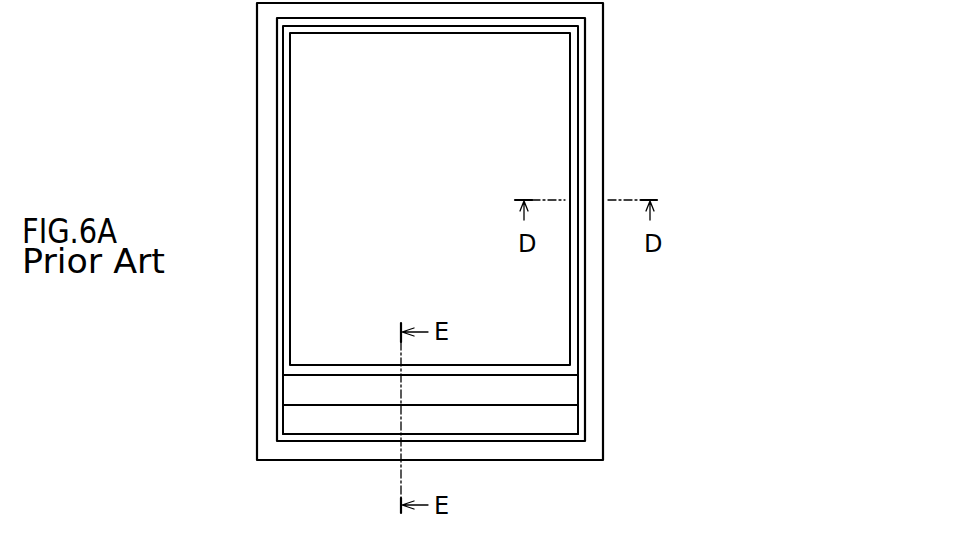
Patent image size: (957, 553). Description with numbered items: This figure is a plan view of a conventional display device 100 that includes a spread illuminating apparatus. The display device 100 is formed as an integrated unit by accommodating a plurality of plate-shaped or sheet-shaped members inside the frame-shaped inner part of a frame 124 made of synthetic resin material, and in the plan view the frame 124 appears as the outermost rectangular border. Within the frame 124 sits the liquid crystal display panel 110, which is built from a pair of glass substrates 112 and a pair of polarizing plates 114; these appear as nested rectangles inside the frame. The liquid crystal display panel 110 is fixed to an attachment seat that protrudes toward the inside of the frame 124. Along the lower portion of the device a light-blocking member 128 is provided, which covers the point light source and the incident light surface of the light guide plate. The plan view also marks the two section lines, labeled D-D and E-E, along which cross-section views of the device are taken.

The display device 100 is at (643, 115).
The frame 124 is at (598, 288).
The polarizing plates 114 is at (554, 326).
The glass substrates 112 is at (575, 356).
The liquid crystal display panel 110 is at (512, 405).
The light-blocking member 128 is at (485, 423).